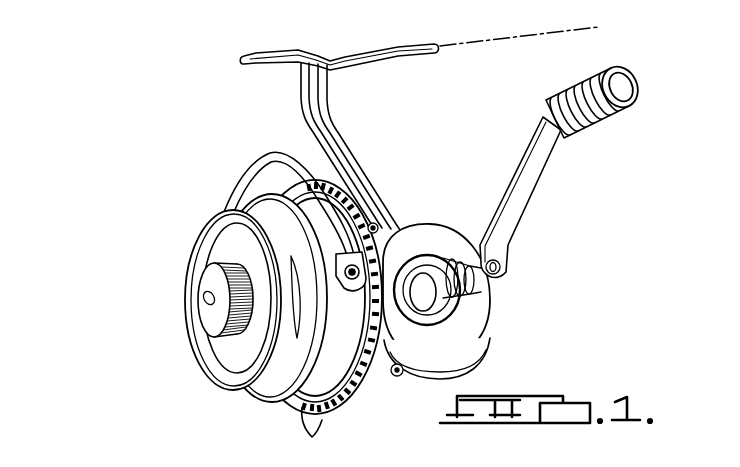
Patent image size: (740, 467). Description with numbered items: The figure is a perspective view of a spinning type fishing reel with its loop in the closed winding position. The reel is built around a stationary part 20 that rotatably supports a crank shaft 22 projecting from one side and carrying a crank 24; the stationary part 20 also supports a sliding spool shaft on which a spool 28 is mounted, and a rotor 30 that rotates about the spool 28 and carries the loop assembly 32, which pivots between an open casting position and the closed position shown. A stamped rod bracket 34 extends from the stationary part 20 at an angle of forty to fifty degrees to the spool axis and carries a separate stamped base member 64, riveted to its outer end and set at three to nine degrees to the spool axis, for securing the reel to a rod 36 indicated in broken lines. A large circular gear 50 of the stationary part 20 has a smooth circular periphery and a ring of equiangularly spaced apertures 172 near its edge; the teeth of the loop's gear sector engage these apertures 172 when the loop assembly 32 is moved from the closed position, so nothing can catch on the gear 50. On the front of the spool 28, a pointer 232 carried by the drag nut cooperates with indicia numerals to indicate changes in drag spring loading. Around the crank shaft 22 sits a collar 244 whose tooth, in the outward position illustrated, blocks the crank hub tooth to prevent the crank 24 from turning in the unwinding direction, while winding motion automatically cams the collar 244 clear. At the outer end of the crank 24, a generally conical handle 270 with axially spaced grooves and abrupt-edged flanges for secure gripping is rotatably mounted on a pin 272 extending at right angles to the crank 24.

The stationary part 20 is at (435, 222).
The crank shaft 22 is at (501, 268).
The crank 24 is at (540, 191).
The spool 28 is at (189, 335).
The rotor 30 is at (271, 408).
The loop assembly 32 is at (244, 165).
The rod bracket 34 is at (346, 142).
The rod 36 is at (512, 42).
The large circular gear 50 is at (348, 398).
The base member 64 is at (392, 48).
The apertures 172 is at (332, 430).
The pointer 232 is at (222, 264).
The collar 244 is at (470, 292).
The handle 270 is at (631, 112).
The pin 272 is at (630, 88).